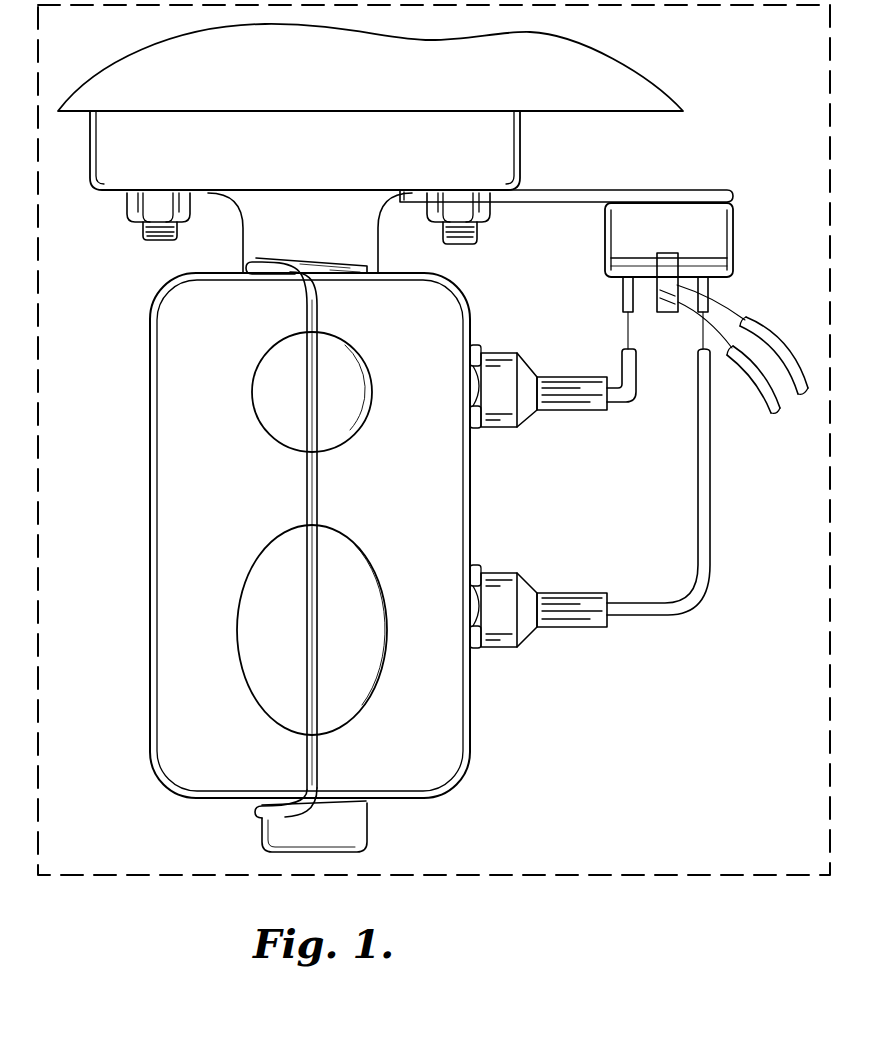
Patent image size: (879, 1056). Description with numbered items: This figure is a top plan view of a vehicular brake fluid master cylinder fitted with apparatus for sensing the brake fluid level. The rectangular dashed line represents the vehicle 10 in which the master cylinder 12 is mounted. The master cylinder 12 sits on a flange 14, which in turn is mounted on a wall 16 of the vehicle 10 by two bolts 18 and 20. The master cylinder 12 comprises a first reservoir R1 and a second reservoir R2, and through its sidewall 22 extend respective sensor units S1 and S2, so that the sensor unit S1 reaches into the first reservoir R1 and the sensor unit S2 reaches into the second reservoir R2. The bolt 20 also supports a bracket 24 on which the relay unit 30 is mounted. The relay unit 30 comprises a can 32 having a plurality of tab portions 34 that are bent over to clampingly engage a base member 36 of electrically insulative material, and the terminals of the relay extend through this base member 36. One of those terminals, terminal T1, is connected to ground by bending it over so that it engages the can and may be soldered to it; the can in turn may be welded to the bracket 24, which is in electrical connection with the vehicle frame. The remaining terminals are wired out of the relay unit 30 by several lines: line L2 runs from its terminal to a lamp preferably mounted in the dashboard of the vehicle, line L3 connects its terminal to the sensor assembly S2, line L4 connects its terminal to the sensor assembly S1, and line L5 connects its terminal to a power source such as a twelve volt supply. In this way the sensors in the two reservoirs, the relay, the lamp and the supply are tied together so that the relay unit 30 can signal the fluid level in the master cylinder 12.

The vehicle 10 is at (183, 879).
The master cylinder 12 is at (143, 466).
The flange 14 is at (507, 160).
The wall 16 is at (657, 103).
The bolt 18 is at (177, 235).
The bolt 20 is at (477, 242).
The sidewall 22 is at (470, 507).
The bracket 24 is at (625, 190).
The relay unit 30 is at (741, 226).
The can 32 is at (612, 240).
The tab portions 34 is at (620, 282).
The base member 36 is at (733, 265).
The terminal T1 is at (660, 253).
The first reservoir R1 is at (360, 637).
The second reservoir R2 is at (357, 393).
The sensor unit S1 is at (503, 648).
The sensor unit S2 is at (506, 430).
The line L2 is at (769, 328).
The line L3 is at (637, 391).
The line L4 is at (706, 590).
The line L5 is at (753, 390).